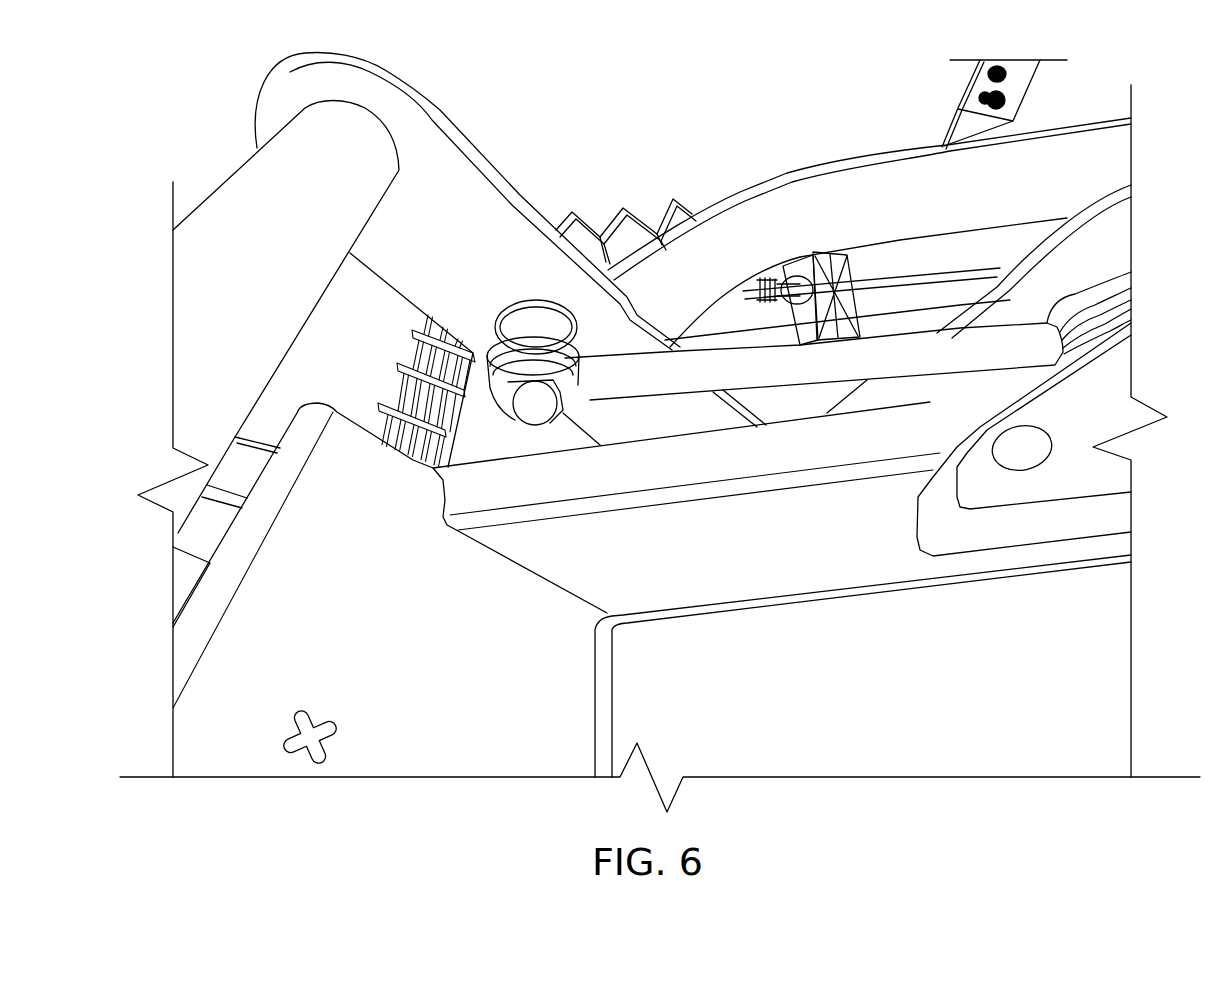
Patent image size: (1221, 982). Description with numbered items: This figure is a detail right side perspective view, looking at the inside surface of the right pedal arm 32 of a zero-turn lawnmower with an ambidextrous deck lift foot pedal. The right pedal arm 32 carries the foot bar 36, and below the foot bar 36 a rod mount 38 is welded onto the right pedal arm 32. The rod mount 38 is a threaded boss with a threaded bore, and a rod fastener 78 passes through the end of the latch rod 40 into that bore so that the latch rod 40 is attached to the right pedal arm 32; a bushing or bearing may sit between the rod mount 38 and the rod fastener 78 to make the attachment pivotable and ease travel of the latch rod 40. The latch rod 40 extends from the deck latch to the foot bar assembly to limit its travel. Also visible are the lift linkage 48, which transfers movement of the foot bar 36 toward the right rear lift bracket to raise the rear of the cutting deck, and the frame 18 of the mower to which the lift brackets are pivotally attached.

The frame 18 is at (752, 545).
The right pedal arm 32 is at (425, 112).
The foot bar 36 is at (248, 208).
The rod mount 38 is at (532, 322).
The latch rod 40 is at (713, 367).
The lift linkage 48 is at (915, 205).
The rod fastener 78 is at (615, 360).